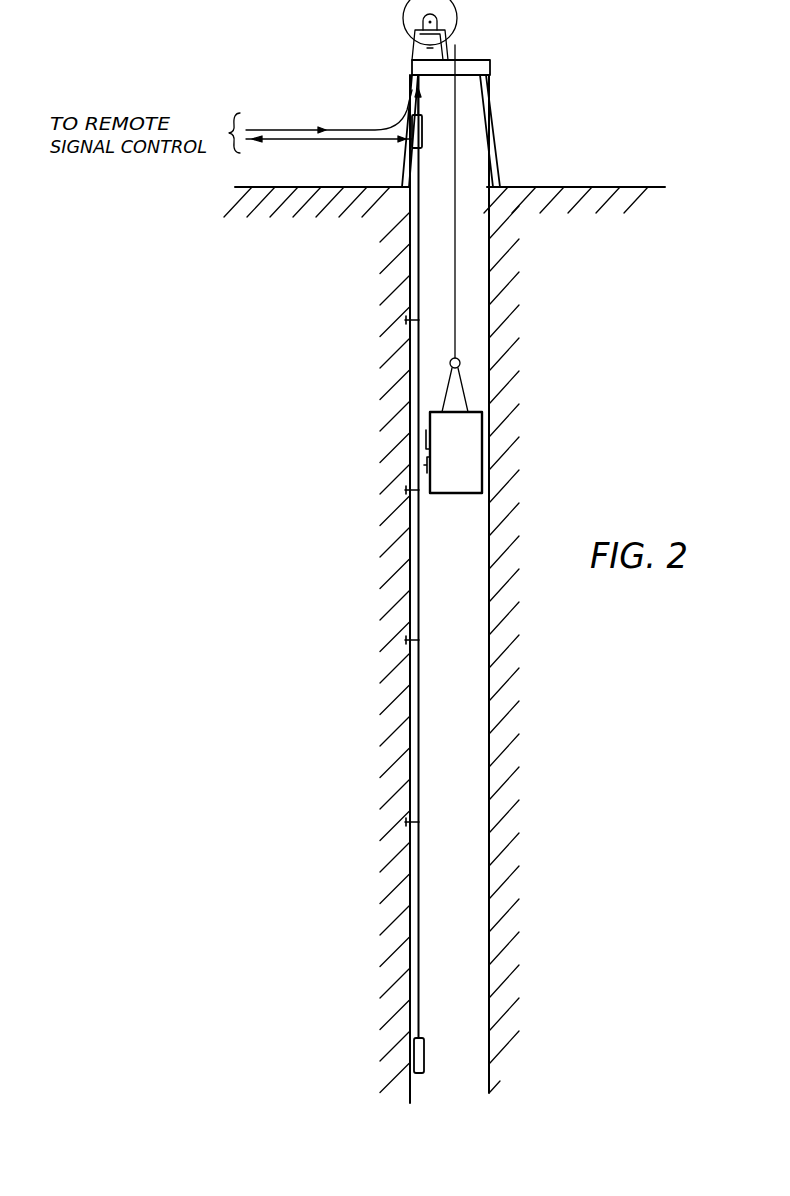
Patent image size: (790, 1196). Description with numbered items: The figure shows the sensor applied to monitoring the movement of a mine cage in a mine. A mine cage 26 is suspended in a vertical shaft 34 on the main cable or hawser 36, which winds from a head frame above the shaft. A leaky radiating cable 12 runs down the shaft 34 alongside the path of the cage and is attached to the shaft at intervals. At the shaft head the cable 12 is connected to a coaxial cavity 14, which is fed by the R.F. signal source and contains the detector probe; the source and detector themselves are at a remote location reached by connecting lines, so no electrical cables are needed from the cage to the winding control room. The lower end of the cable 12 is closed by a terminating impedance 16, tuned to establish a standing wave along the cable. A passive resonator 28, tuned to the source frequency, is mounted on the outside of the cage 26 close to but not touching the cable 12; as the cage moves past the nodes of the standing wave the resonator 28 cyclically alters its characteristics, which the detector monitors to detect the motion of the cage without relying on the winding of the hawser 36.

The leaky radiating cable 12 is at (420, 583).
The coaxial cavity 14 is at (423, 143).
The terminating impedance 16 is at (425, 1048).
The mine cage 26 is at (460, 483).
The passive resonator 28 is at (428, 468).
The vertical shaft 34 is at (492, 673).
The main cable or hawser 36 is at (455, 298).